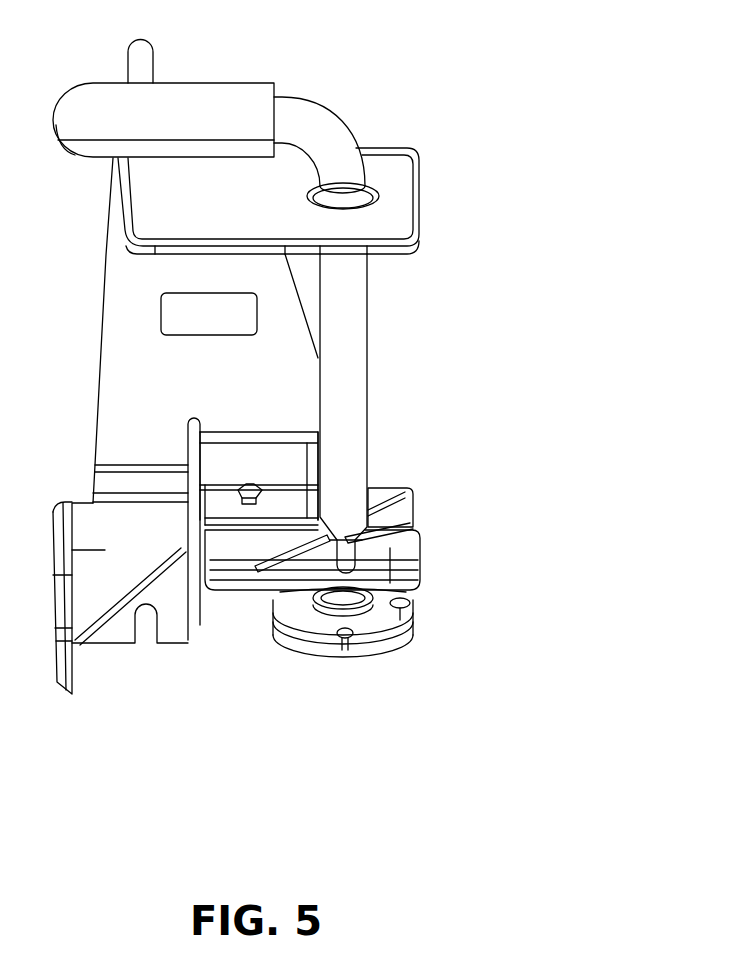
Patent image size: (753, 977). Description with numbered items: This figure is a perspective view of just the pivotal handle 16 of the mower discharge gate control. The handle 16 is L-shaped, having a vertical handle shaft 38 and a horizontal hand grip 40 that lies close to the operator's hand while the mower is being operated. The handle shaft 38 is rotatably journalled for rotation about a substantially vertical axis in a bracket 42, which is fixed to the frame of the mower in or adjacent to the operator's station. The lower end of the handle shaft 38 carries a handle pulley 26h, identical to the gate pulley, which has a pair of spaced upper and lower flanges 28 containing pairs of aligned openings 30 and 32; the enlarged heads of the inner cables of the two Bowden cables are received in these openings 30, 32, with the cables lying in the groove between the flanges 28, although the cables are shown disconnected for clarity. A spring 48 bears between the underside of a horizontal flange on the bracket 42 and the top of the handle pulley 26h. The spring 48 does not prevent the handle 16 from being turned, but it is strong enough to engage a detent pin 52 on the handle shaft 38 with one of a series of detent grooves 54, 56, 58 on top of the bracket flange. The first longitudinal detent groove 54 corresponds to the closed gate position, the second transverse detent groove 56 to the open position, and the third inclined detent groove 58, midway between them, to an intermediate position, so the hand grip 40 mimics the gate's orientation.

The handle 16 is at (420, 306).
The hand grip 40 is at (213, 107).
The bracket 42 is at (173, 380).
The handle shaft 38 is at (352, 392).
The detent pin 52 is at (300, 482).
The first longitudinal detent groove 54 is at (225, 520).
The second transverse detent groove 56 is at (413, 530).
The third inclined detent groove 58 is at (262, 570).
The upper and lower flanges 28 is at (292, 642).
The spring 48 is at (363, 605).
The openings 30 is at (350, 653).
The openings 32 is at (402, 612).
The handle pulley 26h is at (430, 616).